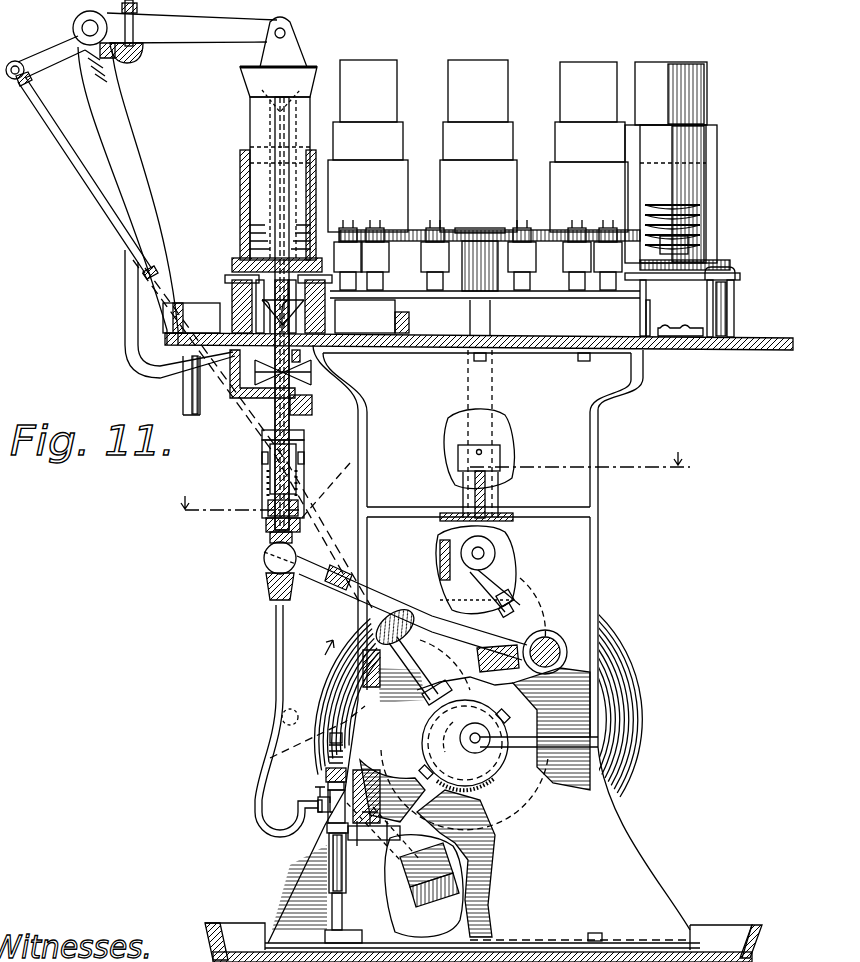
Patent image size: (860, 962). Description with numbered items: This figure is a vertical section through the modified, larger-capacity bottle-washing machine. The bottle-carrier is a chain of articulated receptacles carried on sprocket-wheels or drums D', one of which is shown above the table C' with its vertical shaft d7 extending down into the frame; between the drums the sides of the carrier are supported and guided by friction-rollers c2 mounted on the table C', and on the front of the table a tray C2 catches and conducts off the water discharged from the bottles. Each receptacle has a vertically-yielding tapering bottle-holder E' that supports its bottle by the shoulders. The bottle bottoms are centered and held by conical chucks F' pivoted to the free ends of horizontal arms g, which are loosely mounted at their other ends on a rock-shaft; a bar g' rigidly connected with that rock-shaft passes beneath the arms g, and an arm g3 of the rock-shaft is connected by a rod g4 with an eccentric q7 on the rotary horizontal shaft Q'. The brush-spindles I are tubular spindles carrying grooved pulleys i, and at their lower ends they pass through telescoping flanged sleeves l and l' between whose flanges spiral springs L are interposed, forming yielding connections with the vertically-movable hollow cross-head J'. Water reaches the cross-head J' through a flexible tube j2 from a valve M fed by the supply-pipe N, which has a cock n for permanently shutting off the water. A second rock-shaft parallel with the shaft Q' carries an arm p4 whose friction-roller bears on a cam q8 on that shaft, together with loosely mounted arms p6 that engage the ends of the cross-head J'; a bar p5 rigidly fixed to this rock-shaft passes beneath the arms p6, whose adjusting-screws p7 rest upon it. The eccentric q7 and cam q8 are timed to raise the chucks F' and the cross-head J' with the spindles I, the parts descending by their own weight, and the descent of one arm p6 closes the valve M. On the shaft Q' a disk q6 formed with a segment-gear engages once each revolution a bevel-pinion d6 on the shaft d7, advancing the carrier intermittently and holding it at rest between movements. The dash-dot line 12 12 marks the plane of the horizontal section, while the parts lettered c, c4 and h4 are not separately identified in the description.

The horizontal arms g is at (190, 41).
The bar g' is at (126, 47).
The arm g3 is at (40, 58).
The rod g4 is at (108, 222).
The conical chucks F' is at (263, 87).
The tapering bottle-holders E' is at (468, 166).
The sprocket-wheels or drums D' is at (485, 265).
The vertical shaft d7 is at (718, 224).
The friction-rollers c2 is at (236, 287).
The bearing bracket c4 is at (641, 283).
The valve seat h4 is at (286, 313).
The tray C2 is at (372, 316).
The table C' is at (479, 633).
The pipe c is at (185, 392).
The grooved pulleys i is at (300, 380).
The brush-spindles I is at (292, 416).
The telescoping flanged sleeve l is at (291, 466).
The telescoping flanged sleeve l' is at (324, 491).
The spiral springs L is at (262, 470).
The section line 12 is at (431, 486).
The hollow cross-head J' is at (259, 566).
The flexible tube j2 is at (277, 672).
The valve M is at (316, 802).
The supply-pipe N is at (369, 866).
The cock n is at (392, 850).
The arms p6 is at (330, 572).
The bar p5 is at (478, 655).
The arm p4 is at (497, 553).
The bevel-pinion d6 is at (530, 590).
The adjusting-screws p7 is at (525, 608).
The disk q6 is at (642, 745).
The cam q8 is at (404, 630).
The eccentric q7 is at (428, 744).
The rotary horizontal shaft Q' is at (464, 753).